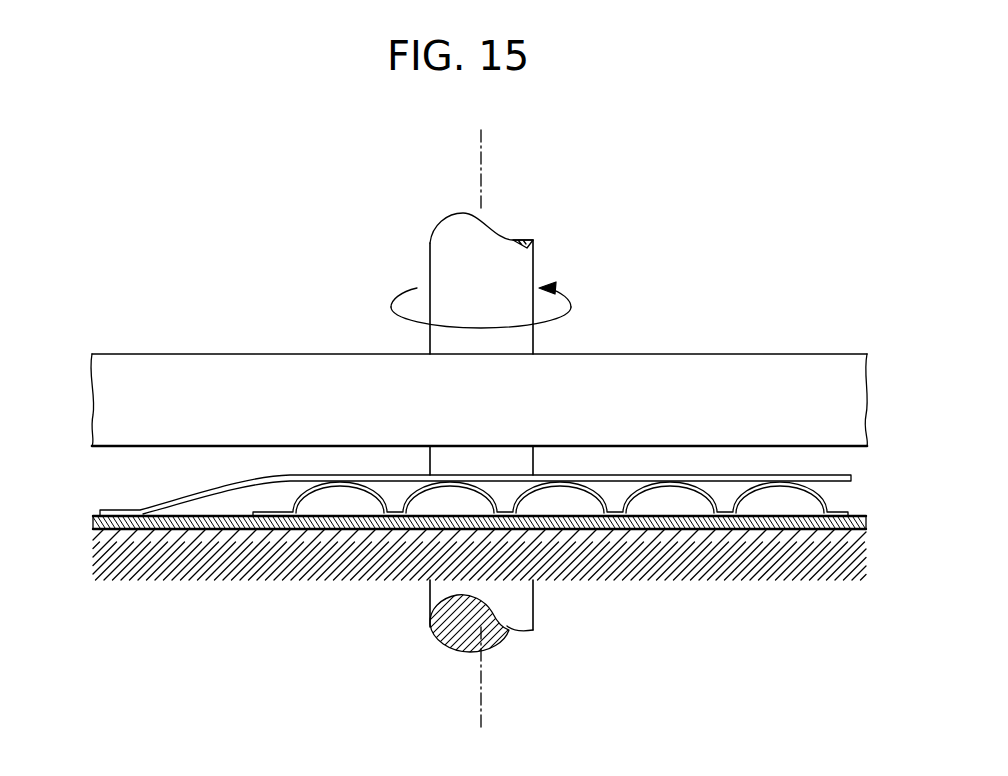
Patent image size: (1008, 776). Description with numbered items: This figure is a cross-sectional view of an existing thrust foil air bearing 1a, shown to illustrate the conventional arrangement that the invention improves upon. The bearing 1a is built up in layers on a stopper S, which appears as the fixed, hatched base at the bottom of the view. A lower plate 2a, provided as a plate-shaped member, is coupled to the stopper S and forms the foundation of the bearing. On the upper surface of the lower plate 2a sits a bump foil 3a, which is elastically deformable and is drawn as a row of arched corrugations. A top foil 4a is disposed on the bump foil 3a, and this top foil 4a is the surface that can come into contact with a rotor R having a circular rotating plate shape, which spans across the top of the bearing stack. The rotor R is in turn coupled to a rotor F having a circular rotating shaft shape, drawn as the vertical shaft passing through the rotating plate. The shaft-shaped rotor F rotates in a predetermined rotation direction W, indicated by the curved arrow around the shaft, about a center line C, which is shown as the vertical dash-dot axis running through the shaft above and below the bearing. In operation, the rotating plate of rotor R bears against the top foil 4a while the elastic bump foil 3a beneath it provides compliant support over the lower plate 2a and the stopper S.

The thrust foil air bearing 1a is at (128, 295).
The rotor F is at (518, 262).
The rotation direction W is at (570, 303).
The rotor R is at (769, 353).
The top foil 4a is at (217, 493).
The bump foil 3a is at (310, 502).
The lower plate 2a is at (370, 530).
The stopper S is at (723, 562).
The center line C is at (482, 683).